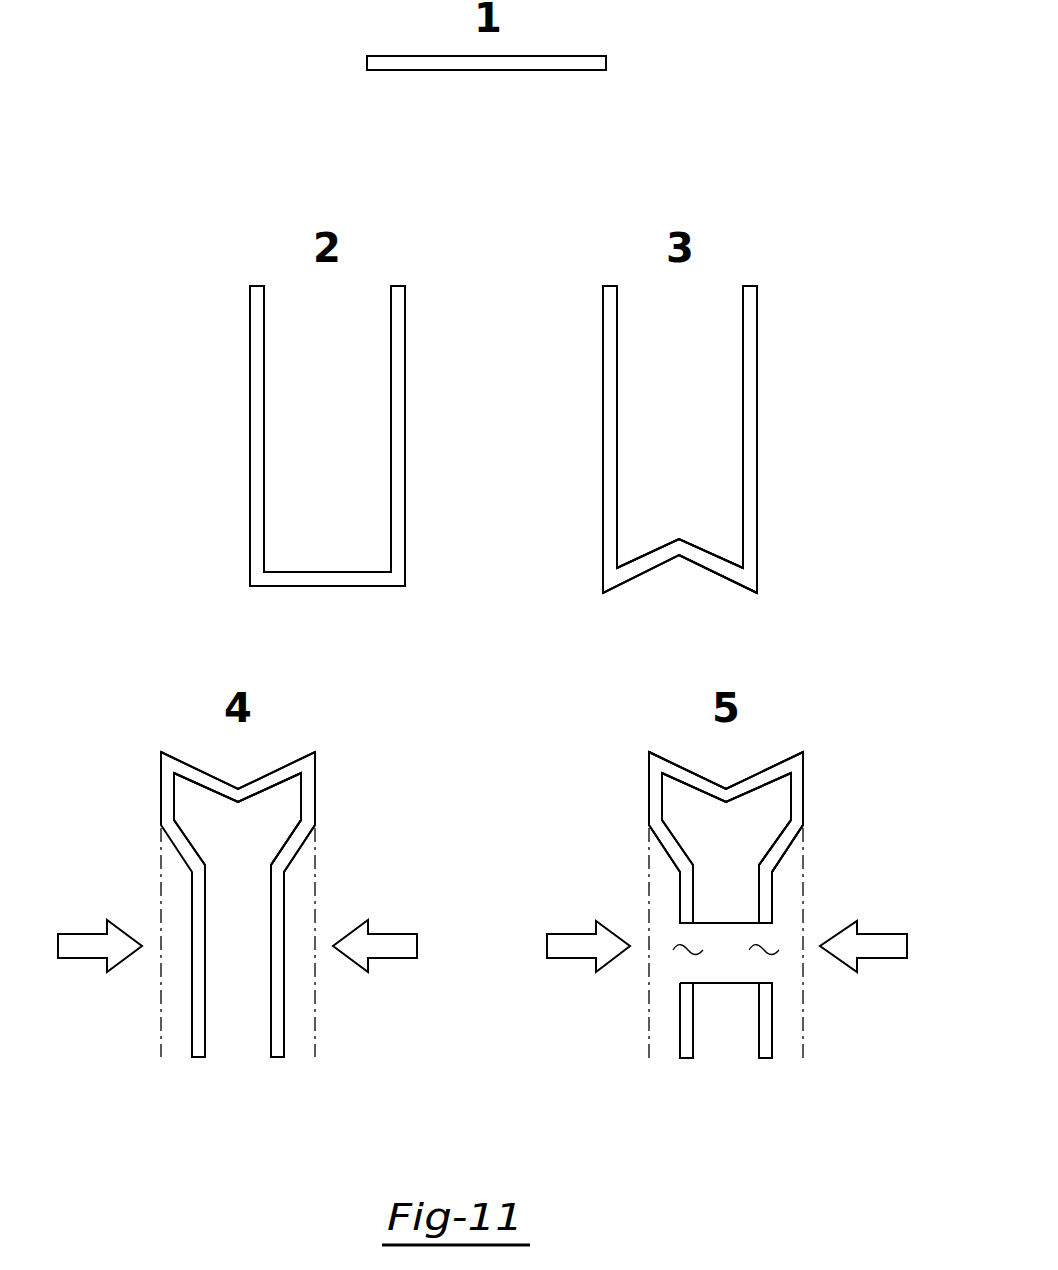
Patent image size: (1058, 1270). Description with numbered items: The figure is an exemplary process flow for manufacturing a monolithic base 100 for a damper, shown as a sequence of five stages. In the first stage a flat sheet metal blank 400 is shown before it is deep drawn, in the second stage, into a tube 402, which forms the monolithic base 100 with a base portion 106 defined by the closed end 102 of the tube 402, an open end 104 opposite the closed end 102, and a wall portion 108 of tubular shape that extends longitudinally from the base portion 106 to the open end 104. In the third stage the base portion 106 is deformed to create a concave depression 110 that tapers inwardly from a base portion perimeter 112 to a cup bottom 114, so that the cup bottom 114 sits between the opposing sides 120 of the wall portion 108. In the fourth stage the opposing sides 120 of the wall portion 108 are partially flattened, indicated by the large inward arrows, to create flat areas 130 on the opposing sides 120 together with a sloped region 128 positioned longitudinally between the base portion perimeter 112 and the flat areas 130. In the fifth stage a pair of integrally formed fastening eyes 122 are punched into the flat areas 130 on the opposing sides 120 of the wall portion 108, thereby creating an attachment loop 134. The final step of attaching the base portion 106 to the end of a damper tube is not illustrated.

The flat sheet metal blank 400 is at (600, 63).
The tube 402 is at (257, 420).
The monolithic base 100 is at (896, 782).
The closed end 102 is at (330, 580).
The open end 104 is at (297, 315).
The base portion 106 is at (247, 543).
The wall portion 108 is at (410, 310).
The concave depression 110 is at (680, 561).
The base portion perimeter 112 is at (757, 583).
The cup bottom 114 is at (679, 538).
The opposing sides 120 is at (757, 372).
The fastening eyes 122 is at (693, 950).
The sloped region 128 is at (298, 857).
The flat areas 130 is at (189, 991).
The attachment loop 134 is at (646, 1035).